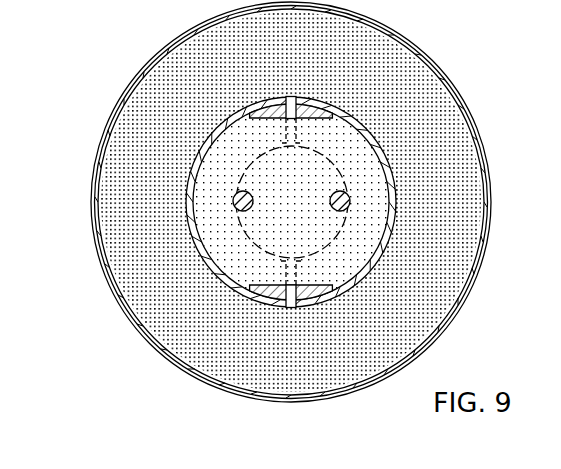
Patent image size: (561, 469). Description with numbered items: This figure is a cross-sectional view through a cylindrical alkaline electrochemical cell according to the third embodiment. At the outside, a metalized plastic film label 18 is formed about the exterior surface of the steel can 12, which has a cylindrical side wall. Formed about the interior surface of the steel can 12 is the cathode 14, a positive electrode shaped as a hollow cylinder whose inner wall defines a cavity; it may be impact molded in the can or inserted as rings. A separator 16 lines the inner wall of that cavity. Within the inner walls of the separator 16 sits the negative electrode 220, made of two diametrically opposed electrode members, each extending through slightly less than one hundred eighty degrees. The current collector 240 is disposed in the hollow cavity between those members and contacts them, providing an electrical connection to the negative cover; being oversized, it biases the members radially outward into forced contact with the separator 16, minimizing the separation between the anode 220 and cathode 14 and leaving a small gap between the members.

The steel can 12 is at (214, 389).
The cathode 14 is at (188, 337).
The separator 16 is at (192, 229).
The plastic film label 18 is at (136, 317).
The negative electrode 220 is at (248, 166).
The current collector 240 is at (235, 190).